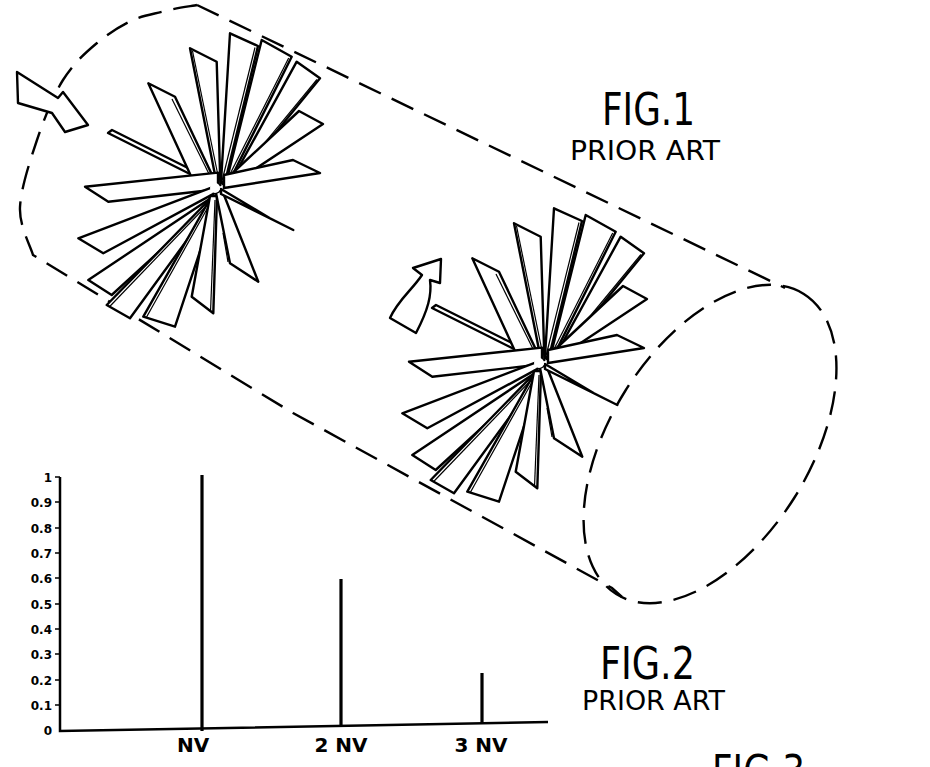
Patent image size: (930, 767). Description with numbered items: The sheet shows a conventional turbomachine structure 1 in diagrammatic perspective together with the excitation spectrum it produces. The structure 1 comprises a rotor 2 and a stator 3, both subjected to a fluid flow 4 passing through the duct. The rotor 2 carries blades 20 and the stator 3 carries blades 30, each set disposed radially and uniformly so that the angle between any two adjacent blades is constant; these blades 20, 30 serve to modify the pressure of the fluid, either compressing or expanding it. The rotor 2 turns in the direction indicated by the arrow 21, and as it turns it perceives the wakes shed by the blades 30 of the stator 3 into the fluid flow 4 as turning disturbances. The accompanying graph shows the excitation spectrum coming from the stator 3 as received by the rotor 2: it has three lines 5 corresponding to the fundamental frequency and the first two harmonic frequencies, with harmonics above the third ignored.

In FIG. 1, the conventional structure 1 is at (395, 97).
In FIG. 1, the rotor 2 is at (531, 362).
In FIG. 1, the stator 3 is at (206, 197).
In FIG. 1, the fluid flow 4 is at (34, 92).
In FIG. 2, the lines 5 is at (203, 548).
In FIG. 1, the blades 20 is at (623, 317).
In FIG. 1, the arrow 21 is at (410, 307).
In FIG. 1, the blades 30 is at (292, 133).